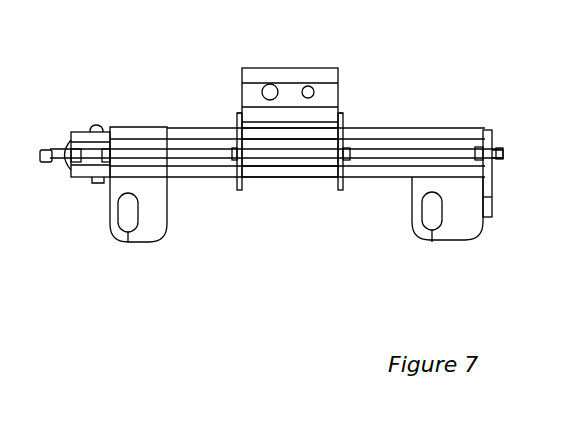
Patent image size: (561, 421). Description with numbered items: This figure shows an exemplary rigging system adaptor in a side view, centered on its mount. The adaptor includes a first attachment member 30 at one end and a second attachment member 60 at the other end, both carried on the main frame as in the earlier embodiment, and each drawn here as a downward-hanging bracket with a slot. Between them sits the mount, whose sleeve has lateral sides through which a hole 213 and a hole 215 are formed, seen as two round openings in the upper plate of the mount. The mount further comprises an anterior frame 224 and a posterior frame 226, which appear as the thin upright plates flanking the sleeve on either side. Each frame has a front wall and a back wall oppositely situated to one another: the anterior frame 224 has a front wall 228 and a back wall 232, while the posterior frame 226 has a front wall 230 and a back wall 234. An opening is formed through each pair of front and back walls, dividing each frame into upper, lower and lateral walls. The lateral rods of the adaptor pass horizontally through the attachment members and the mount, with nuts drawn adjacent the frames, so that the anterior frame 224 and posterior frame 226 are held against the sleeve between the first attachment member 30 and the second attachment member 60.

The first attachment member 30 is at (492, 257).
The second attachment member 60 is at (97, 245).
The hole 213 is at (315, 88).
The hole 215 is at (272, 84).
The anterior frame 224 is at (226, 110).
The posterior frame 226 is at (354, 111).
The front wall 228 is at (343, 121).
The front wall 230 is at (237, 122).
The back wall 232 is at (335, 167).
The back wall 234 is at (251, 176).